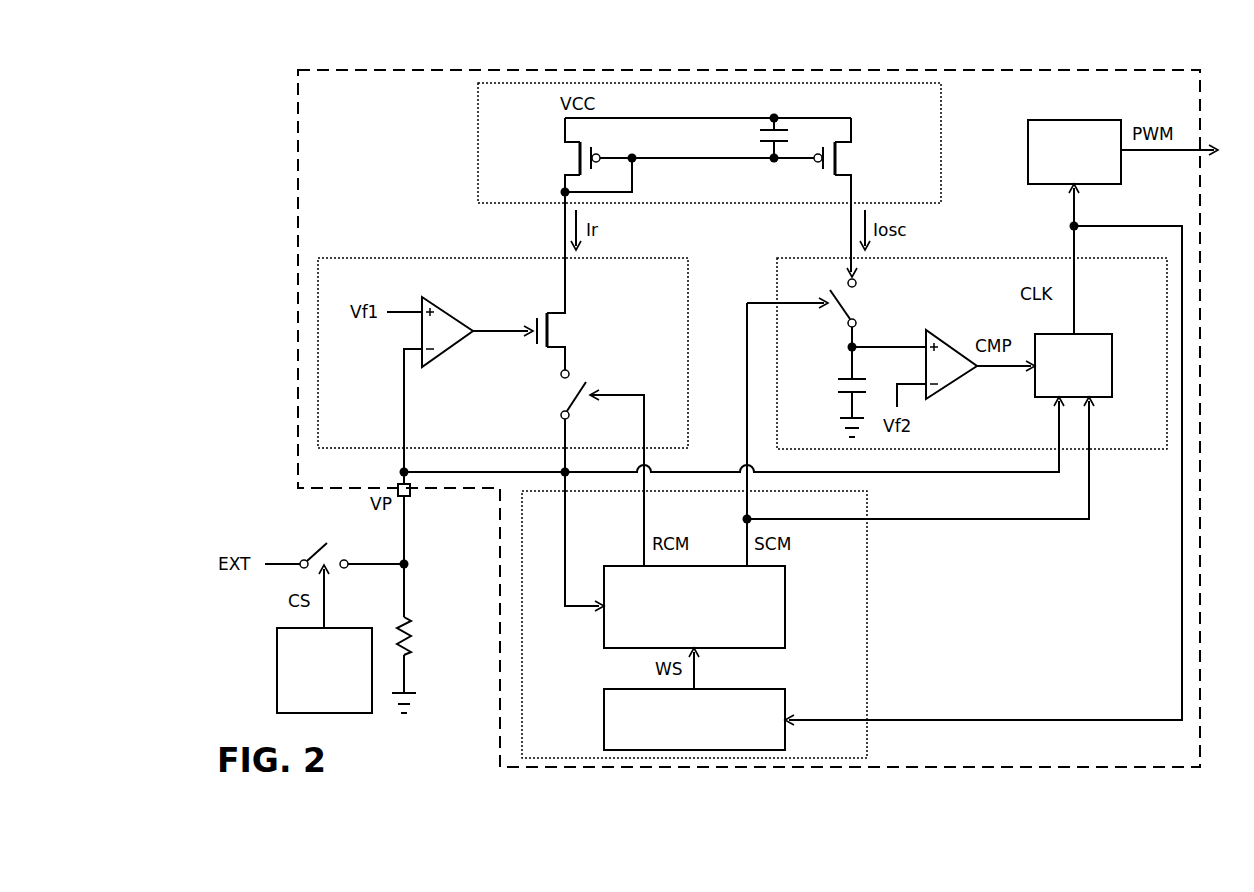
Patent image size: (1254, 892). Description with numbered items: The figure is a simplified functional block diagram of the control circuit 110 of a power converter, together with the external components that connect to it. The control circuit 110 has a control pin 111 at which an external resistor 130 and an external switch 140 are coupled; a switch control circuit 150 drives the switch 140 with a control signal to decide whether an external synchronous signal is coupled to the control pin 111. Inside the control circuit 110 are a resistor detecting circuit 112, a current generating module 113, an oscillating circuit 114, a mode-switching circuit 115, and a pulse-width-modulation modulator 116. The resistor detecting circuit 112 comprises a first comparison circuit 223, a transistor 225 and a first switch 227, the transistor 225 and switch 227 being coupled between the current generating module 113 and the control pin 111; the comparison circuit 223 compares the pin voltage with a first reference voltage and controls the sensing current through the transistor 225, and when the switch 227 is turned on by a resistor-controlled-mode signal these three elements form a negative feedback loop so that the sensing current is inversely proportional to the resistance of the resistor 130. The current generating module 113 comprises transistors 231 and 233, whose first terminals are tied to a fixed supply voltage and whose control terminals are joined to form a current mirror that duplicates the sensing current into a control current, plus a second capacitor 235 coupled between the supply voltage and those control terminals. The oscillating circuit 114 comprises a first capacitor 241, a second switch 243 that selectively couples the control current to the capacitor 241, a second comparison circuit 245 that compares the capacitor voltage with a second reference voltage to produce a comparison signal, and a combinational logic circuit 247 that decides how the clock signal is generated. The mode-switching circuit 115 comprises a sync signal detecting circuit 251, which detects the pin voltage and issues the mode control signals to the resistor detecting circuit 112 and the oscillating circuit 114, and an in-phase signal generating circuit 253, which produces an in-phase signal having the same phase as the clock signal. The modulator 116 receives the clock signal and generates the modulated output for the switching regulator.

The control circuit 110 is at (272, 150).
The control pin 111 is at (410, 490).
The resistor detecting circuit 112 is at (373, 257).
The current generating module 113 is at (478, 145).
The oscillating circuit 114 is at (1118, 449).
The mode-switching circuit 115 is at (867, 625).
The PWM modulator 116 is at (1028, 150).
The resistor 130 is at (412, 642).
The switch 140 is at (321, 541).
The switch control circuit 150 is at (277, 670).
The first comparison circuit 223 is at (448, 350).
The transistor 225 is at (565, 327).
The first switch 227 is at (560, 395).
The transistor 231 is at (570, 158).
The transistor 233 is at (853, 158).
The second capacitor 235 is at (758, 136).
The first capacitor 241 is at (838, 385).
The second switch 243 is at (852, 303).
The second comparison circuit 245 is at (952, 387).
The combinational logic circuit 247 is at (1073, 365).
The sync signal detecting circuit 251 is at (785, 605).
The in-phase signal generating circuit 253 is at (604, 723).